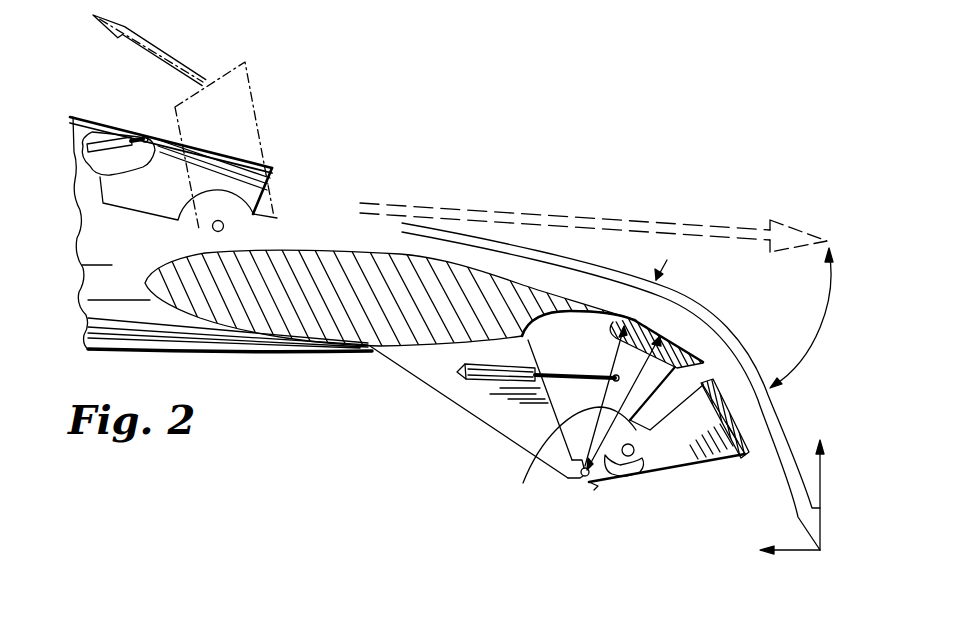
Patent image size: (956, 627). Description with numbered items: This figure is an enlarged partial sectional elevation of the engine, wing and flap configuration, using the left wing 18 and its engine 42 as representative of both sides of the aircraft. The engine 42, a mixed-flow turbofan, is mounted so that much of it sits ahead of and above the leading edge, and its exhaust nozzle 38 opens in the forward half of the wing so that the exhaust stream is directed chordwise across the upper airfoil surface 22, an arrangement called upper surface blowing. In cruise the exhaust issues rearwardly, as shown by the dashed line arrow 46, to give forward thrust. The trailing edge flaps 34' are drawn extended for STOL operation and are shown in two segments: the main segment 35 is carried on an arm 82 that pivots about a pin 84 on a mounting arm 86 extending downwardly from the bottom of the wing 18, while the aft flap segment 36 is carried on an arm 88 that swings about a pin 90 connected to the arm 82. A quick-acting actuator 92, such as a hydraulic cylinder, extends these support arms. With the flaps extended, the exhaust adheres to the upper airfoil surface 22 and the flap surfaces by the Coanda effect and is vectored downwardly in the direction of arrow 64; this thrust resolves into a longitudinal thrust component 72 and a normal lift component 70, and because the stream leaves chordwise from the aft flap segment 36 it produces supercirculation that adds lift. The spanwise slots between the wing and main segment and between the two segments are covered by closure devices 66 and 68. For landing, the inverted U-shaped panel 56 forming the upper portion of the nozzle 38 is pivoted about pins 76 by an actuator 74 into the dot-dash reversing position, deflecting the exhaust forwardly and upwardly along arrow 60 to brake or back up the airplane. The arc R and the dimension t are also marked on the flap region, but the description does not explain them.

The left wing 18 is at (316, 328).
The upper airfoil surface 22 is at (368, 258).
The trailing edge flaps 34' is at (624, 384).
The main segment 35 is at (668, 352).
The aft flap segment 36 is at (746, 454).
The engine exhaust nozzle 38 is at (262, 203).
The engine 42 is at (92, 357).
The dashed line arrow 46 is at (590, 212).
The inverted U-shaped panel 56 is at (176, 137).
The arrow 60 is at (158, 54).
The arrow 64 is at (781, 420).
The closure device 66 is at (640, 318).
The closure device 68 is at (719, 390).
The normal lift component 70 is at (822, 479).
The longitudinal thrust component 72 is at (793, 552).
The actuator 74 is at (80, 172).
The pins 76 is at (213, 230).
The arm 82 is at (596, 492).
The pin 84 is at (587, 480).
The mounting arm 86 is at (473, 410).
The arm 88 is at (689, 467).
The pin 90 is at (632, 474).
The quick-acting actuator 92 is at (467, 383).
The radius arc R is at (523, 483).
The blade tip thickness t is at (617, 383).